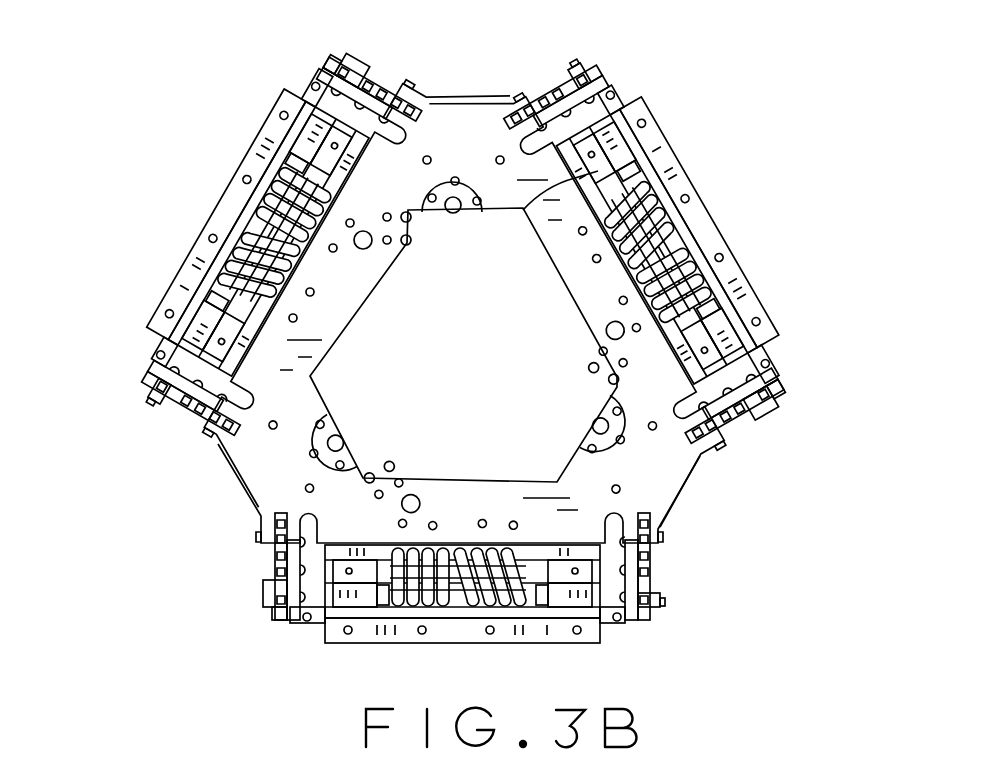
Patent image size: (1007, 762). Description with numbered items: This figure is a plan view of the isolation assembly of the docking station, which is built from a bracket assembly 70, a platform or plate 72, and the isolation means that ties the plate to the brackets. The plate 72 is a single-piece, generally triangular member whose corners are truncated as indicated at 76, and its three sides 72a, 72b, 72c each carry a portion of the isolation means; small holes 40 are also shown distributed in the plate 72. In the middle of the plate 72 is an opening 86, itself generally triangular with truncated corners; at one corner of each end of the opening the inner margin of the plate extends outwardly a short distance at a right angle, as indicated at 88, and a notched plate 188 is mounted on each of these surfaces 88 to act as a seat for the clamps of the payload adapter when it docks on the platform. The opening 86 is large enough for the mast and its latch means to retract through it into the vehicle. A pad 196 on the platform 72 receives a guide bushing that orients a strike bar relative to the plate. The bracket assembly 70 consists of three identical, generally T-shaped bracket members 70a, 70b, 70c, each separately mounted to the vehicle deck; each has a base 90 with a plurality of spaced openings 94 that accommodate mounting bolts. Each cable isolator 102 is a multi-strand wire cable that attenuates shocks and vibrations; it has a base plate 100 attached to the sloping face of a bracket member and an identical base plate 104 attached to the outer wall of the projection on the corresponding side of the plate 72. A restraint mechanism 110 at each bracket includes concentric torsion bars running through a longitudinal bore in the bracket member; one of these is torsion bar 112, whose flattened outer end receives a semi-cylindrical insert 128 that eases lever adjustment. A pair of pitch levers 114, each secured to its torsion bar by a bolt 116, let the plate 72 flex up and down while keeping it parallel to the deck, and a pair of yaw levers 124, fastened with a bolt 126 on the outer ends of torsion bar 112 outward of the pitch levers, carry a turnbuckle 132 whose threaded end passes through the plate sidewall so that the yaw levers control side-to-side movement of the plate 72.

The mounting hole 40 is at (357, 228).
The bracket assembly 70 is at (384, 256).
The bracket member 70a is at (508, 340).
The bracket member 70b is at (411, 256).
The bracket member 70c is at (496, 346).
The platform or plate 72 is at (443, 508).
The side of plate 72a is at (780, 280).
The side of plate 72b is at (343, 150).
The side of plate 72c is at (360, 574).
The truncated corners 76 is at (243, 468).
The opening 86 is at (468, 317).
The right angle section 88 is at (410, 247).
The base 90 is at (422, 634).
The openings 94 is at (345, 574).
The base plate 100 is at (280, 147).
The cable isolator 102 is at (520, 543).
The base plate 104 is at (362, 543).
The restraint mechanism 110 is at (496, 349).
The torsion bar 112 is at (663, 603).
The pitch levers 114 is at (280, 562).
The bolt 116 is at (627, 92).
The yaw levers 124 is at (262, 598).
The bolt 126 is at (277, 627).
The semi-cylindrical insert 128 is at (661, 620).
The turnbuckle 132 is at (258, 538).
The notched plate 188 is at (411, 224).
The pad 196 is at (470, 178).